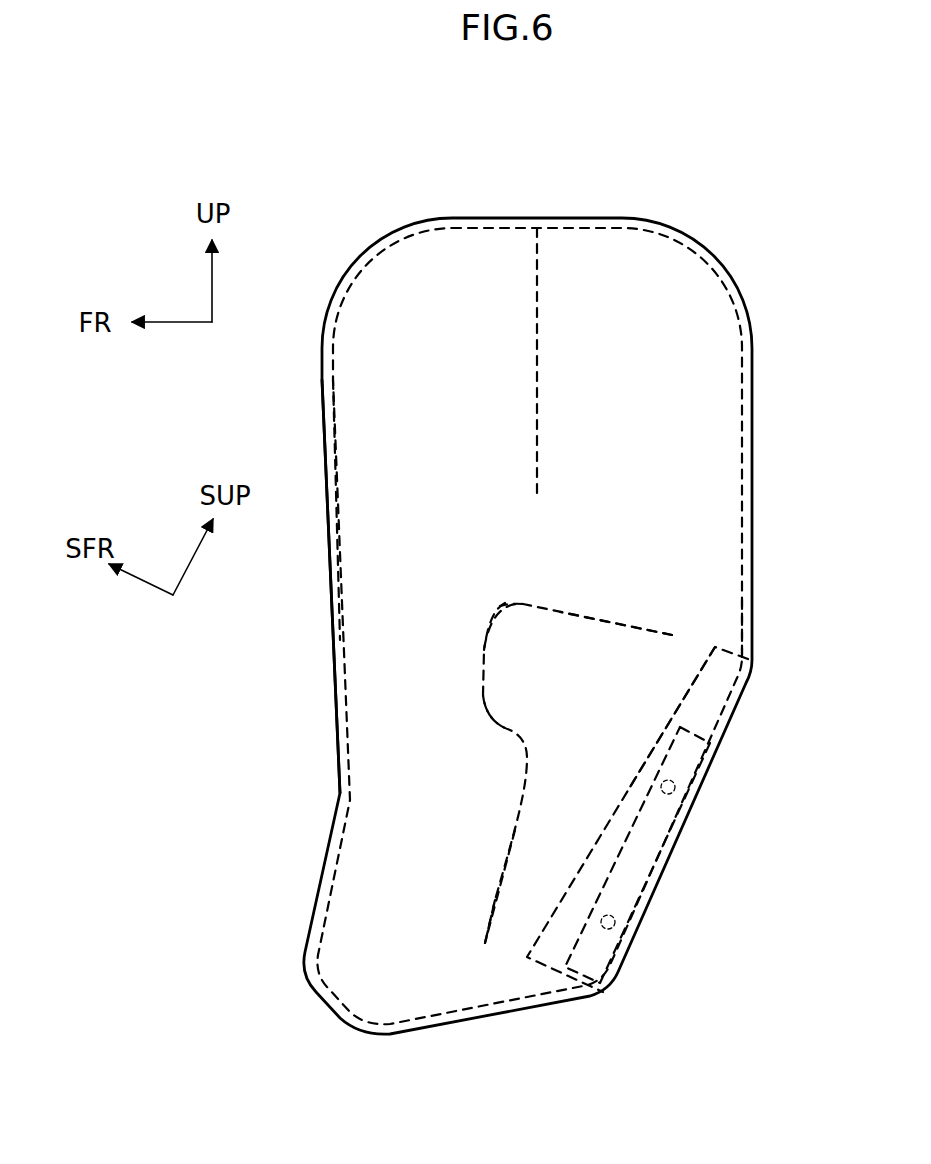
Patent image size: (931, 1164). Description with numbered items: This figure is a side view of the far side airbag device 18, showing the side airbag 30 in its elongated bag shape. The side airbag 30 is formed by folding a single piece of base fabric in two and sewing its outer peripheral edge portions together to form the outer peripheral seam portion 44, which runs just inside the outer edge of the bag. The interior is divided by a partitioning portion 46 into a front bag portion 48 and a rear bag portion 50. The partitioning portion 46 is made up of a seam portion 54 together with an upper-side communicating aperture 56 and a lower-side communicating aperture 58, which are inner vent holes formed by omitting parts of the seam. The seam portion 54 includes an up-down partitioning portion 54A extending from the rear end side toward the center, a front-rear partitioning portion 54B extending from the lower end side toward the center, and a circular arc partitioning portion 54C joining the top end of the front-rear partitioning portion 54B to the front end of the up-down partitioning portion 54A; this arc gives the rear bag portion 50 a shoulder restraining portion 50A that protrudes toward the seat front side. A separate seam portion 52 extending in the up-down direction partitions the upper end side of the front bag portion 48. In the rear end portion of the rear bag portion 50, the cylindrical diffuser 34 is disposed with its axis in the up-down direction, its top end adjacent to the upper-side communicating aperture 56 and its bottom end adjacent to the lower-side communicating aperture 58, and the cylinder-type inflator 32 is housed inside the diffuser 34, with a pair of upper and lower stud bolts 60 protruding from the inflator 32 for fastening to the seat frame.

The far side airbag device 18 is at (302, 607).
The side airbag 30 is at (391, 232).
The inflator 32 is at (640, 895).
The diffuser 34 is at (632, 778).
The outer peripheral seam portion 44 is at (653, 237).
The partitioning portion 46 is at (476, 708).
The front bag portion 48 is at (376, 500).
The rear bag portion 50 is at (583, 817).
The shoulder restraining portion 50A is at (522, 635).
The seam portion 52 is at (540, 338).
The seam portion 54 is at (518, 742).
The up-down partitioning portion 54A is at (603, 618).
The front-rear partitioning portion 54B is at (510, 851).
The circular arc partitioning portion 54C is at (483, 645).
The upper-side communicating aperture 56 is at (688, 642).
The lower-side communicating aperture 58 is at (485, 968).
The stud bolts 60 is at (676, 787).